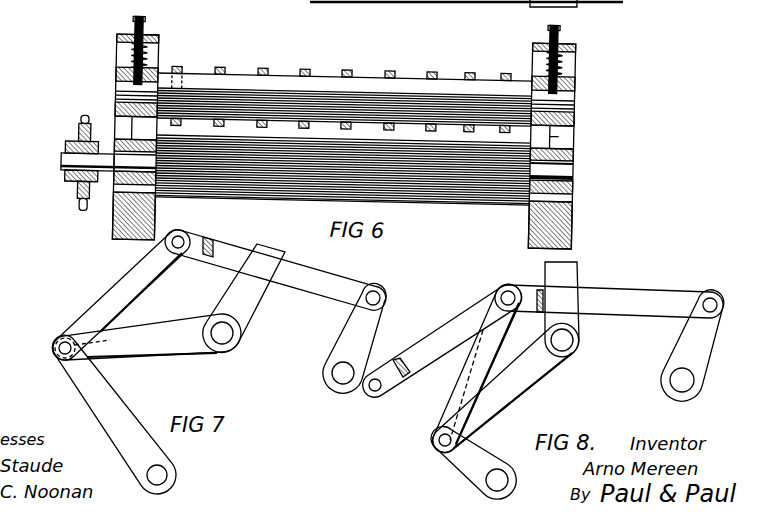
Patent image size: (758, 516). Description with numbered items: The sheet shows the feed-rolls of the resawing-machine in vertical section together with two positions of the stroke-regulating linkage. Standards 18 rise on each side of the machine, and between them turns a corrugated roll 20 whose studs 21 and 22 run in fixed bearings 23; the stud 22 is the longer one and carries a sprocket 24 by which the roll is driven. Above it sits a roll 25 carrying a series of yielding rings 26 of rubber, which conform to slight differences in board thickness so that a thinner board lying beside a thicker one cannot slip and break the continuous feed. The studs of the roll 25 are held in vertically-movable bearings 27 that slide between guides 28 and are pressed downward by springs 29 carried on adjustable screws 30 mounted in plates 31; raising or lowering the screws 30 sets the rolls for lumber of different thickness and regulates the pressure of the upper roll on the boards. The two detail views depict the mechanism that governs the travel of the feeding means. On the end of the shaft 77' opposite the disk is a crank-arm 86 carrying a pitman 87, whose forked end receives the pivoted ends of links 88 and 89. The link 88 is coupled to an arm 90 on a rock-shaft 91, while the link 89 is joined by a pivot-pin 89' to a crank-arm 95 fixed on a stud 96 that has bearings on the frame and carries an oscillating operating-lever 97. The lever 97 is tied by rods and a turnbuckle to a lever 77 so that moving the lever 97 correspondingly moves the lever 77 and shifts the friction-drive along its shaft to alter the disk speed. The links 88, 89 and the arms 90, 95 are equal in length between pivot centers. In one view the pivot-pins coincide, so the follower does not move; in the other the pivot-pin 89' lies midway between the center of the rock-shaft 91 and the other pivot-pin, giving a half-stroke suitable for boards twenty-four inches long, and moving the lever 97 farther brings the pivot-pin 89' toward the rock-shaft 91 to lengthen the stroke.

In FIG. 6, the standard 18 is at (125, 56).
In FIG. 6, the corrugated roll 20 is at (483, 191).
In FIG. 6, the stud 21 is at (575, 154).
In FIG. 6, the stud 22 is at (110, 174).
In FIG. 6, the fixed bearing 23 is at (115, 211).
In FIG. 6, the sprocket 24 is at (80, 205).
In FIG. 6, the roll 25 is at (360, 78).
In FIG. 6, the yielding rings 26 is at (223, 64).
In FIG. 6, the vertically-movable bearings 27 is at (115, 76).
In FIG. 6, the guides 28 is at (140, 128).
In FIG. 6, the spring 29 is at (143, 53).
In FIG. 6, the adjustable screw 30 is at (142, 25).
In FIG. 6, the plate 31 is at (115, 39).
In FIG. 7, the lever 77 is at (318, 379).
In FIG. 8, the shaft 77' is at (677, 399).
In FIG. 7, the crank-arm 86 is at (350, 330).
In FIG. 8, the crank-arm 86 is at (693, 337).
In FIG. 7, the pitman 87 is at (327, 291).
In FIG. 8, the pitman 87 is at (653, 293).
In FIG. 8, the link 88 is at (438, 335).
In FIG. 7, the link 89 is at (121, 295).
In FIG. 8, the link 89 is at (471, 368).
In FIG. 7, the pivot-pin 89' is at (53, 362).
In FIG. 8, the pivot-pin 89' is at (425, 457).
In FIG. 7, the arm 90 is at (112, 428).
In FIG. 8, the arm 90 is at (412, 430).
In FIG. 7, the rock-shaft 91 is at (157, 475).
In FIG. 8, the rock-shaft 91 is at (498, 480).
In FIG. 7, the crank-arm 95 is at (167, 356).
In FIG. 8, the crank-arm 95 is at (530, 383).
In FIG. 7, the stud 96 is at (222, 338).
In FIG. 8, the stud 96 is at (562, 340).
In FIG. 7, the oscillating operating-lever 97 is at (237, 329).
In FIG. 8, the oscillating operating-lever 97 is at (570, 280).